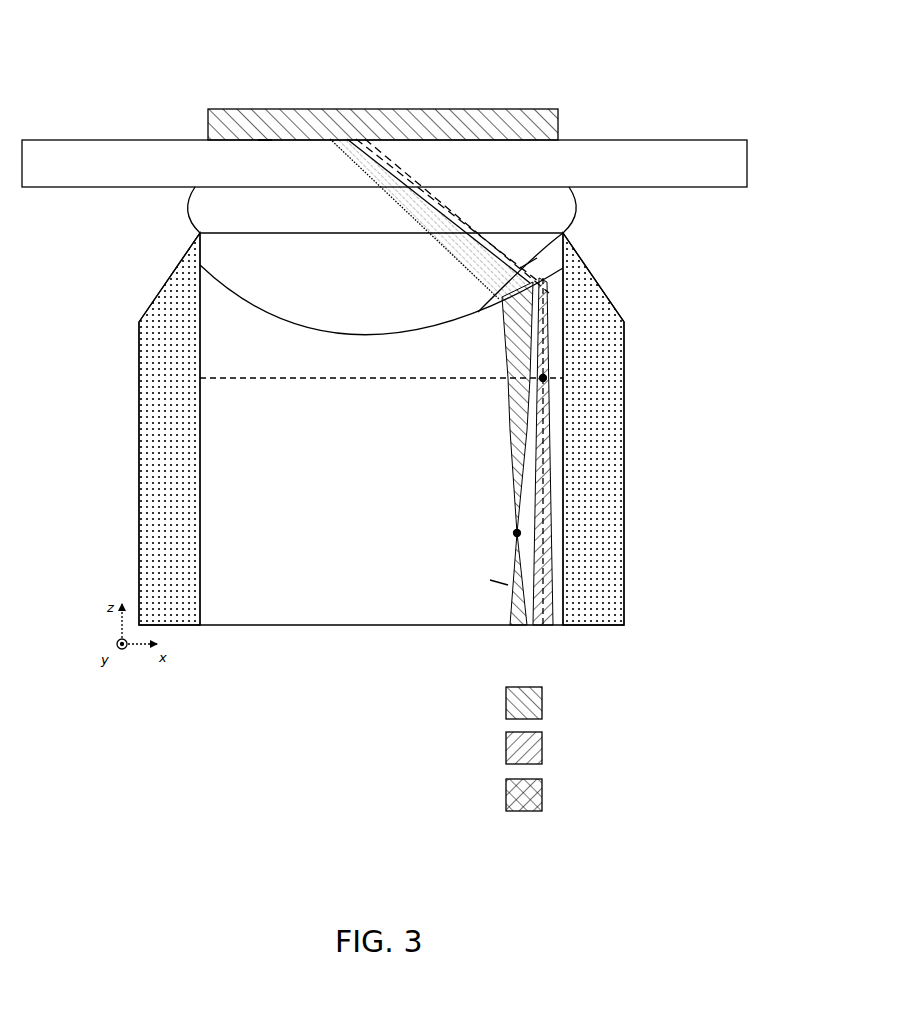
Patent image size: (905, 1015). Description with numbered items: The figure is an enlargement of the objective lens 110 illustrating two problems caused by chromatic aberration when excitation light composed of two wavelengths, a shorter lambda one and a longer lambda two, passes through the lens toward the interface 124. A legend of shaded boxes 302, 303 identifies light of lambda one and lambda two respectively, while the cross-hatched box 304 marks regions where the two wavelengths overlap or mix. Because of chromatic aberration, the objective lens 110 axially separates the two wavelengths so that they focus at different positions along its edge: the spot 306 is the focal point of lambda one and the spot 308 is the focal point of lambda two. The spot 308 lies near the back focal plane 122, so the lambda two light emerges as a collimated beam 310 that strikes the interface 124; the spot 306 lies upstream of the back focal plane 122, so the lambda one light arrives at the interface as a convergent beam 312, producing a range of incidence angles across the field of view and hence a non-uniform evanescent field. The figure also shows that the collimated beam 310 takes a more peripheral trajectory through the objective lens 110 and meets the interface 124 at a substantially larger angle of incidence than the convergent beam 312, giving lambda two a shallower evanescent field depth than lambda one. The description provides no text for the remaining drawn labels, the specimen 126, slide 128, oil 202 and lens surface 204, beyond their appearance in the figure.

The objective lens 110 is at (150, 497).
The back focal plane 122 is at (610, 378).
The interface 124 is at (265, 138).
The specimen 126 is at (460, 108).
The slide 128 is at (728, 172).
The immersion oil 202 is at (310, 217).
The lens surface 204 is at (400, 311).
The shaded box 302 is at (543, 745).
The shaded box 303 is at (543, 700).
The cross-hatched box 304 is at (543, 792).
The spot 306 is at (516, 532).
The spot 308 is at (543, 378).
The collimated beam 310 is at (563, 233).
The convergent beam 312 is at (487, 267).